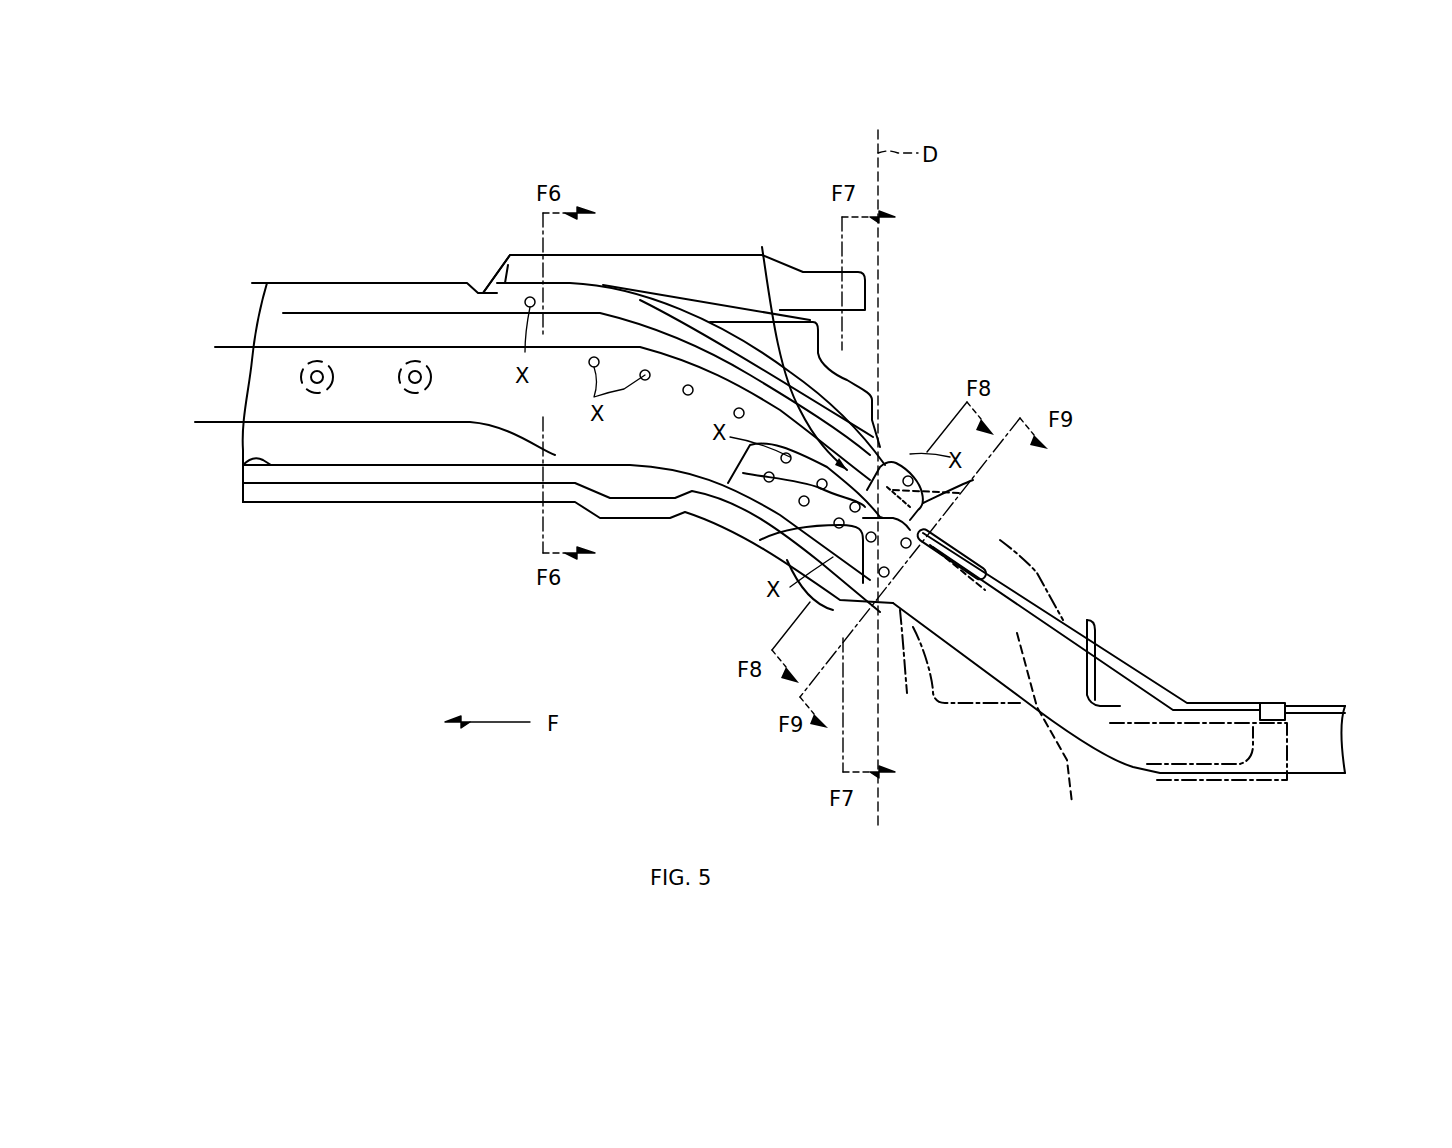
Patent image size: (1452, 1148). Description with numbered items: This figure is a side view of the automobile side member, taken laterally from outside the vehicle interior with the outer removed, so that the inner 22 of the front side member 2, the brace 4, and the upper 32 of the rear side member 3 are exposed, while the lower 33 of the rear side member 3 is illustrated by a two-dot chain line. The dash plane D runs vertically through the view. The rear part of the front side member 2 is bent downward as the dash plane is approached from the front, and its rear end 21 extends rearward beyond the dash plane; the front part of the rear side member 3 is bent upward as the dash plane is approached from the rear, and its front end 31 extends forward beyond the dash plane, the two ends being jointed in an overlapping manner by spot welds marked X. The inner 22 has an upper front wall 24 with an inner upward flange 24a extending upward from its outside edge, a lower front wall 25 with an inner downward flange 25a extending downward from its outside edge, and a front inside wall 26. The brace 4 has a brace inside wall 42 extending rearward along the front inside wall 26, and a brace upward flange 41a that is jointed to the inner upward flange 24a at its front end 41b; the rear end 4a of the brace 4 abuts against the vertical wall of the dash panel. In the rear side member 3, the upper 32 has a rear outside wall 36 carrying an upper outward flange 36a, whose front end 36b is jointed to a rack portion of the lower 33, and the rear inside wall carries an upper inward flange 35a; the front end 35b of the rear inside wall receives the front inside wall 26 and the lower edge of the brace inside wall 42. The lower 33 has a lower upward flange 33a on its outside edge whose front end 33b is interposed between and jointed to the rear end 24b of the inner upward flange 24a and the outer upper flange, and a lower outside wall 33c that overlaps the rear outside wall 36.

The front side member 2 is at (536, 428).
The rear side member 3 is at (1150, 656).
The brace 4 is at (704, 315).
The rear end of the brace 4a is at (863, 312).
The rear end of the front side member 21 is at (920, 573).
The inner 22 is at (253, 330).
The upper front wall 24 is at (405, 319).
The inner upward flange 24a is at (327, 292).
The rear end of the inner upward flange 24b is at (907, 460).
The lower front wall 25 is at (247, 454).
The inner downward flange 25a is at (453, 497).
The front inside wall 26 is at (260, 387).
The front end of the rear side member 31 is at (796, 342).
The upper 32 is at (1345, 770).
The lower 33 is at (1152, 736).
The lower upward flange 33a is at (1037, 573).
The front end of the lower upward flange 33b is at (973, 480).
The lower outside wall 33c is at (956, 671).
The upper inward flange 35a is at (997, 537).
The front end of the rear inside wall 35b is at (745, 465).
The rear outside wall 36 is at (1345, 738).
The upper outward flange 36a is at (1315, 702).
The front end of the upper outward flange 36b is at (820, 533).
The brace upward flange 41a is at (640, 262).
The front end of the brace upward flange 41b is at (507, 278).
The brace inside wall 42 is at (810, 343).